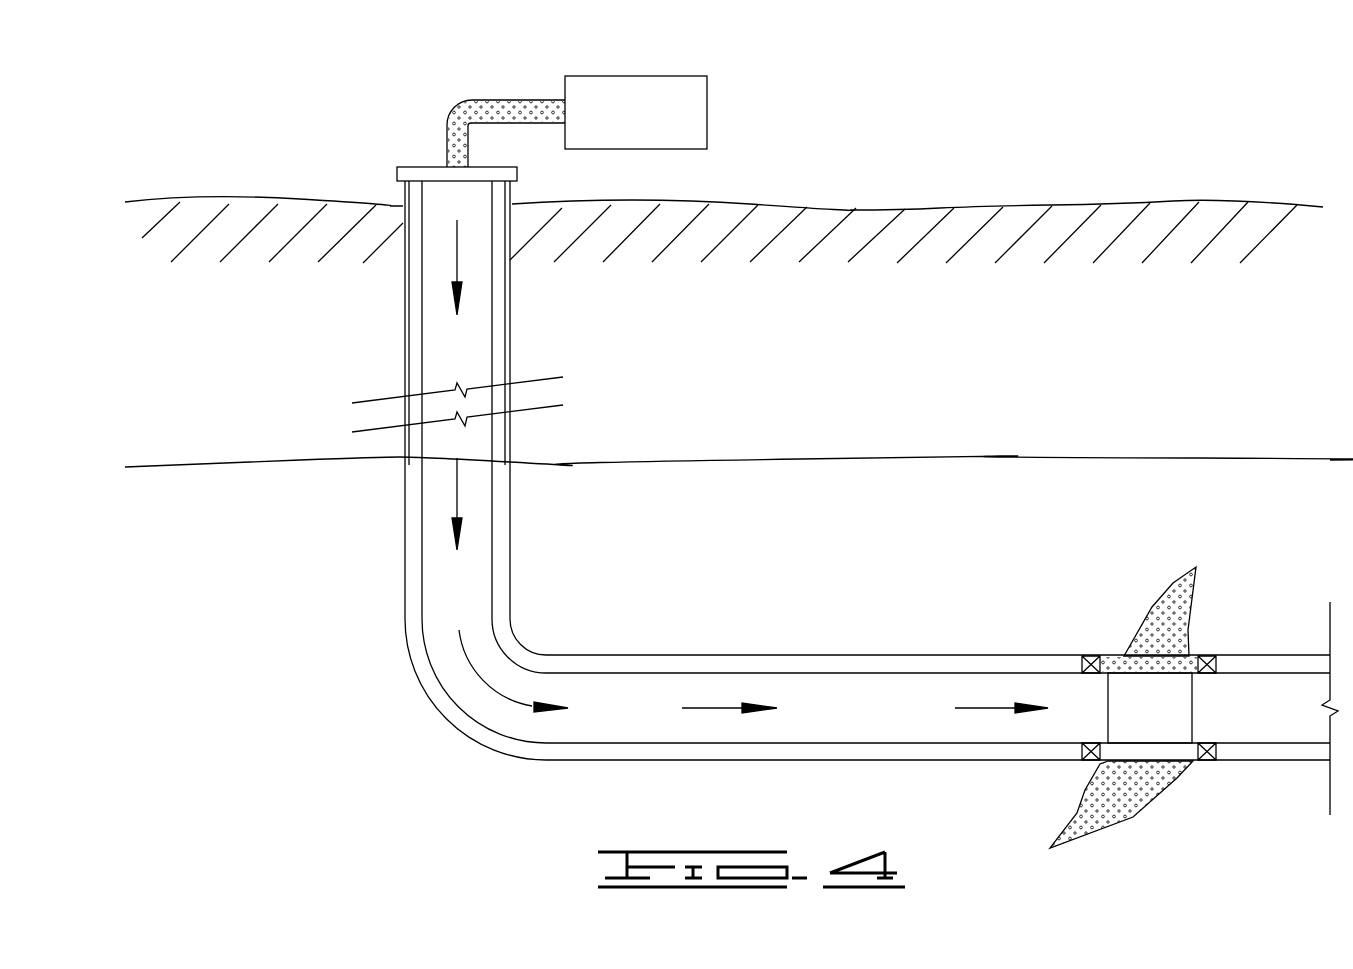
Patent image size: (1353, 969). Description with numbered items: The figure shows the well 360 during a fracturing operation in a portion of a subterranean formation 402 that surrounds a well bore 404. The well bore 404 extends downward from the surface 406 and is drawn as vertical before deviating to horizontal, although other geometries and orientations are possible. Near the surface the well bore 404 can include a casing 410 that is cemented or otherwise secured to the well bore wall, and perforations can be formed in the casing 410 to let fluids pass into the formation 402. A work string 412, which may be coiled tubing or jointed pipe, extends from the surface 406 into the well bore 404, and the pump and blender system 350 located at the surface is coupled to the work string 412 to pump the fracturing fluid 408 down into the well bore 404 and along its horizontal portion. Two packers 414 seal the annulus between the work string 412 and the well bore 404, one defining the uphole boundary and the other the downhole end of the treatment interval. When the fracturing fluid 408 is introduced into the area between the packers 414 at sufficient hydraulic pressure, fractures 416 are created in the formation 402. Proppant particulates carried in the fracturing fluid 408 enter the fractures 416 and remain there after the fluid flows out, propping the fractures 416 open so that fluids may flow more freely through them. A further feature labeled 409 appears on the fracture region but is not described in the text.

The pump and blender system 350 is at (656, 124).
The well 360 is at (415, 755).
The subterranean formation 402 is at (894, 505).
The well bore 404 is at (415, 331).
The surface 406 is at (1133, 202).
The fracturing fluid 408 is at (460, 106).
The fracture 409 is at (1175, 618).
The casing 410 is at (407, 378).
The work string 412 is at (422, 572).
The packers 414 is at (1095, 655).
The fractures 416 is at (1125, 582).